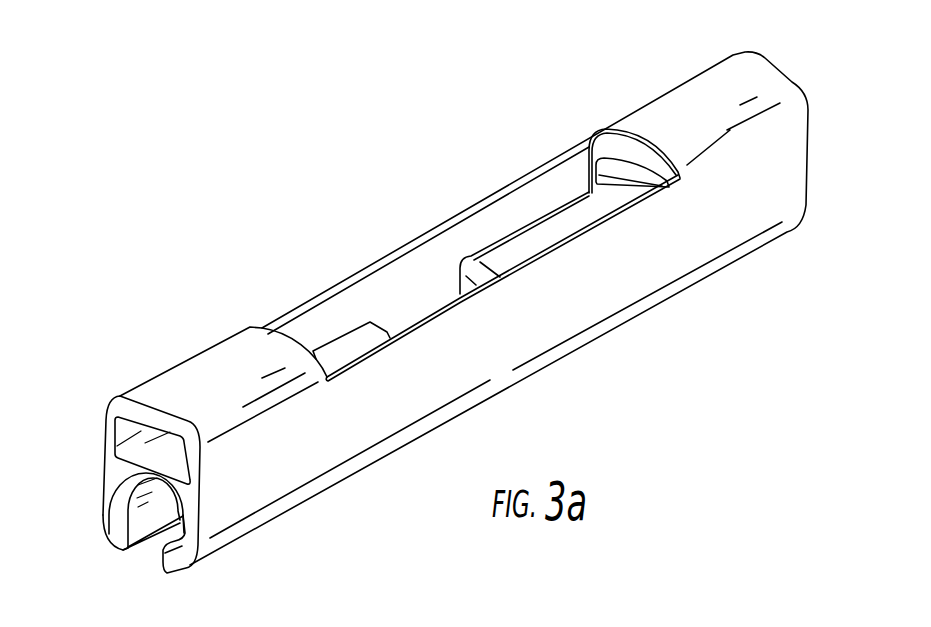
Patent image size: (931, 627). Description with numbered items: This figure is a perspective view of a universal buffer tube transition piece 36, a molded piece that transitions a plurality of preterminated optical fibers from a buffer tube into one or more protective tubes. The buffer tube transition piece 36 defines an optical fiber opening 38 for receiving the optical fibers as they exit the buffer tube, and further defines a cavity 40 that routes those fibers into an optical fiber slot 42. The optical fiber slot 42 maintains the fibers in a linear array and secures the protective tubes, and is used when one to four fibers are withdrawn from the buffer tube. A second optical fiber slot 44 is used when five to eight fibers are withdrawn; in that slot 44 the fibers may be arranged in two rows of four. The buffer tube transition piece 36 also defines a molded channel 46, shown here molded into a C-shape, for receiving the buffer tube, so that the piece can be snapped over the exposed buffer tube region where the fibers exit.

The universal buffer tube transition piece 36 is at (352, 191).
The optical fiber opening 38 is at (433, 304).
The cavity 40 is at (553, 191).
The optical fiber slot 42 is at (634, 189).
The optical fiber slot 44 is at (160, 453).
The molded channel 46 is at (158, 510).